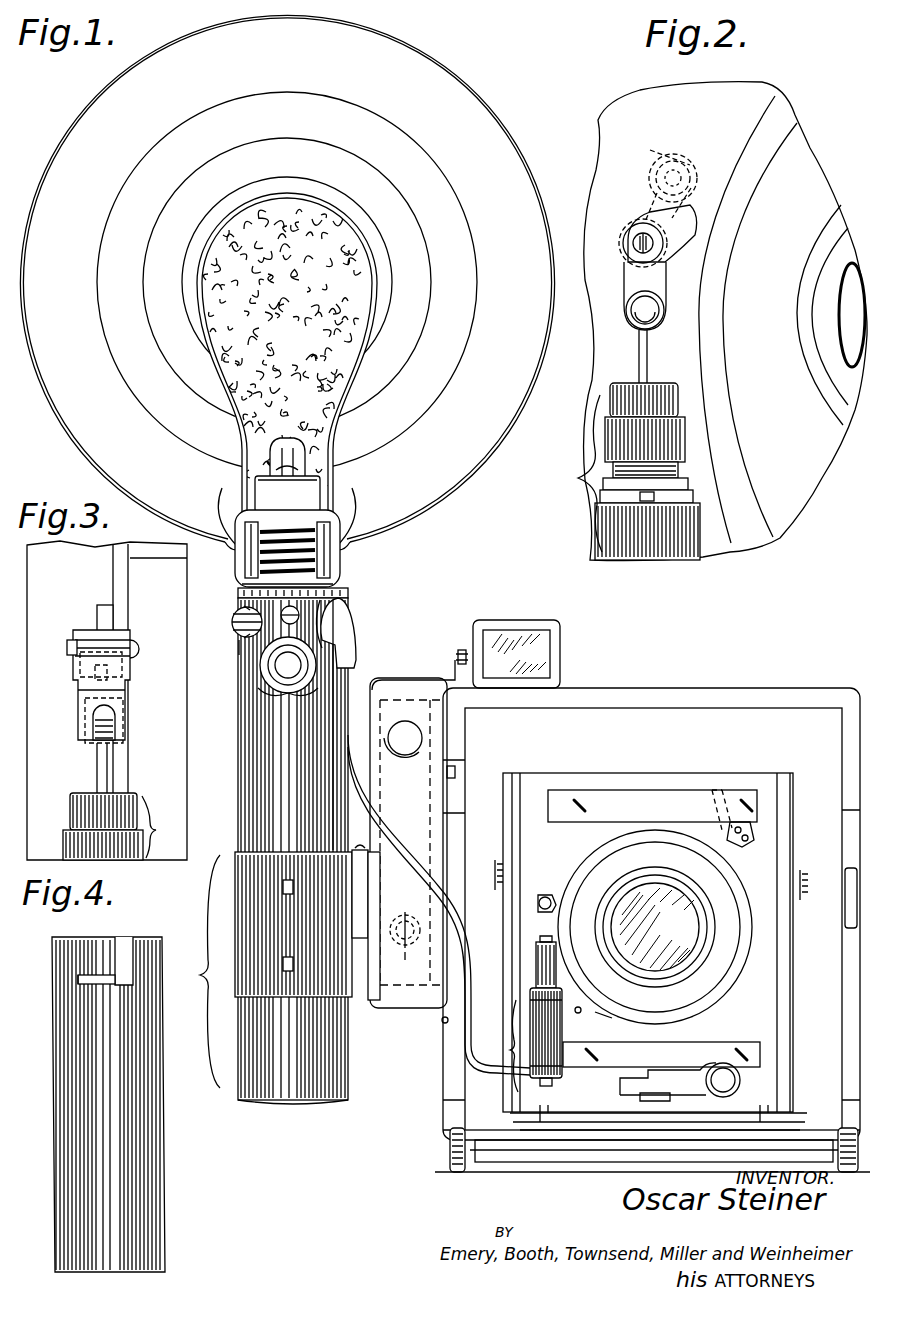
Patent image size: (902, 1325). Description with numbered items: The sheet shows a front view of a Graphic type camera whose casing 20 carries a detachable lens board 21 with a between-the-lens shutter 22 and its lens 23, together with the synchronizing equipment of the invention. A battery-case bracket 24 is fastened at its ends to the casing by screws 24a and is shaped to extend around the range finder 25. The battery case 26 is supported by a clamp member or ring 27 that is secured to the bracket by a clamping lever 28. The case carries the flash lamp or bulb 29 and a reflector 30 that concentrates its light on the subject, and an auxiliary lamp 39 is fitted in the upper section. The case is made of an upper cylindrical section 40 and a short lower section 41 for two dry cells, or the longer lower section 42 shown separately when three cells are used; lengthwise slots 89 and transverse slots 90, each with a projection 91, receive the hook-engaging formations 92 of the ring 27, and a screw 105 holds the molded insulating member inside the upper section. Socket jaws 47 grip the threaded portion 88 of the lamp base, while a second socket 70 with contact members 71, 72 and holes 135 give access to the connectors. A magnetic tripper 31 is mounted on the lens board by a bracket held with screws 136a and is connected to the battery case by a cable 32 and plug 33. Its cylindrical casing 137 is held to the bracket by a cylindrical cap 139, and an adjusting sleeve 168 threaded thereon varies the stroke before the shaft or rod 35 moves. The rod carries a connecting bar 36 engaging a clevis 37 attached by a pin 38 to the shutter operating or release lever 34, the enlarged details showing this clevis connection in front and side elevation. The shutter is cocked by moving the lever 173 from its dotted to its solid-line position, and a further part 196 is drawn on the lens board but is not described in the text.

In FIG. 1, the camera casing 20 is at (712, 706).
In FIG. 1, the lens board 21 is at (767, 868).
In FIG. 2, the lens board 21 is at (622, 116).
In FIG. 1, the between-the-lens shutter 22 is at (705, 990).
In FIG. 2, the between-the-lens shutter 22 is at (814, 168).
In FIG. 3, the between-the-lens shutter 22 is at (102, 560).
In FIG. 1, the lens 23 is at (678, 893).
In FIG. 1, the battery-case bracket 24 is at (424, 672).
In FIG. 1, the screws 24a is at (460, 652).
In FIG. 1, the range finder 25 is at (408, 843).
In FIG. 1, the battery case 26 is at (196, 971).
In FIG. 1, the clamp member or ring 27 is at (249, 968).
In FIG. 1, the clamping lever 28 is at (357, 888).
In FIG. 1, the flash lamp or bulb 29 is at (362, 290).
In FIG. 1, the reflector 30 is at (428, 494).
In FIG. 1, the magnetic tripper 31 is at (523, 1040).
In FIG. 2, the magnetic tripper 31 is at (567, 473).
In FIG. 3, the magnetic tripper 31 is at (126, 828).
In FIG. 1, the cable 32 is at (349, 690).
In FIG. 1, the plug 33 is at (348, 621).
In FIG. 1, the operating or release lever 34 is at (548, 896).
In FIG. 2, the operating or release lever 34 is at (680, 243).
In FIG. 3, the operating or release lever 34 is at (96, 615).
In FIG. 2, the shaft or rod 35 is at (639, 357).
In FIG. 3, the shaft or rod 35 is at (102, 766).
In FIG. 1, the connecting bar 36 is at (546, 962).
In FIG. 2, the connecting bar 36 is at (680, 165).
In FIG. 3, the connecting bar 36 is at (105, 718).
In FIG. 2, the clevis 37 is at (625, 282).
In FIG. 3, the clevis 37 is at (118, 692).
In FIG. 2, the pin 38 is at (637, 232).
In FIG. 3, the pin 38 is at (136, 650).
In FIG. 1, the auxiliary lamp 39 is at (289, 696).
In FIG. 1, the upper battery-case section 40 is at (249, 768).
In FIG. 1, the lower battery-case section 41 is at (346, 1078).
In FIG. 4, the additional lower battery-case section 42 is at (152, 1112).
In FIG. 1, the clamping members or socket jaws 47 is at (250, 567).
In FIG. 1, the second socket 70 is at (233, 622).
In FIG. 1, the contact member 71 is at (241, 608).
In FIG. 1, the contact member 72 is at (241, 634).
In FIG. 1, the threaded portion of the lamp base 88 is at (302, 534).
In FIG. 4, the vertical or lengthwise slots 89 is at (124, 945).
In FIG. 4, the horizontal or transverse slots 90 is at (100, 975).
In FIG. 4, the projection 91 is at (112, 985).
In FIG. 1, the hook-engaging formations 92 is at (289, 957).
In FIG. 1, the screw 105 is at (299, 611).
In FIG. 1, the holes 135 is at (239, 648).
In FIG. 1, the screws 136a is at (596, 1013).
In FIG. 2, the cylindrical casing 137 is at (662, 548).
In FIG. 2, the cylindrical cap or nut 139 is at (690, 488).
In FIG. 2, the adjusting sleeve 168 is at (676, 398).
In FIG. 3, the adjusting sleeve 168 is at (78, 807).
In FIG. 1, the lever 173 is at (730, 822).
In FIG. 1, the screw 196 is at (576, 1014).